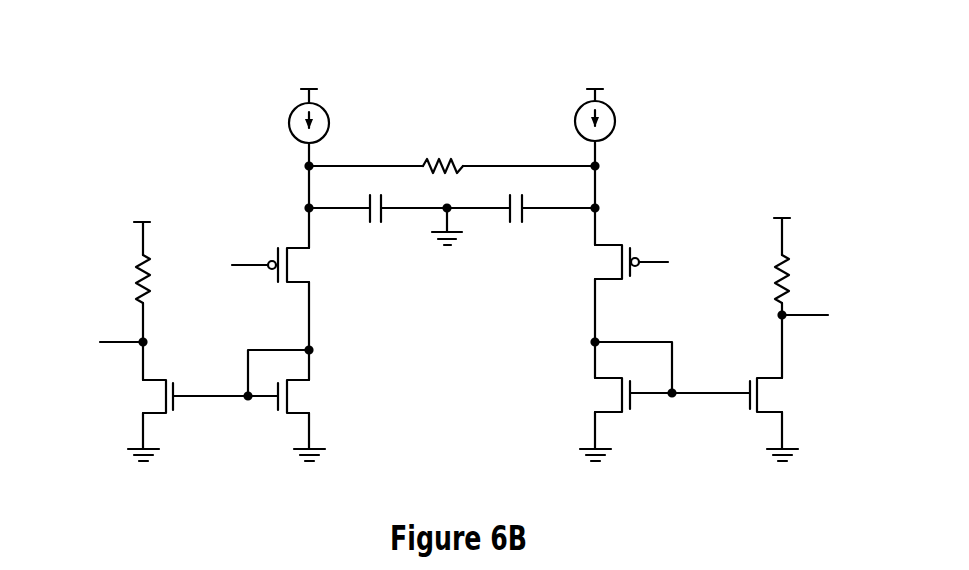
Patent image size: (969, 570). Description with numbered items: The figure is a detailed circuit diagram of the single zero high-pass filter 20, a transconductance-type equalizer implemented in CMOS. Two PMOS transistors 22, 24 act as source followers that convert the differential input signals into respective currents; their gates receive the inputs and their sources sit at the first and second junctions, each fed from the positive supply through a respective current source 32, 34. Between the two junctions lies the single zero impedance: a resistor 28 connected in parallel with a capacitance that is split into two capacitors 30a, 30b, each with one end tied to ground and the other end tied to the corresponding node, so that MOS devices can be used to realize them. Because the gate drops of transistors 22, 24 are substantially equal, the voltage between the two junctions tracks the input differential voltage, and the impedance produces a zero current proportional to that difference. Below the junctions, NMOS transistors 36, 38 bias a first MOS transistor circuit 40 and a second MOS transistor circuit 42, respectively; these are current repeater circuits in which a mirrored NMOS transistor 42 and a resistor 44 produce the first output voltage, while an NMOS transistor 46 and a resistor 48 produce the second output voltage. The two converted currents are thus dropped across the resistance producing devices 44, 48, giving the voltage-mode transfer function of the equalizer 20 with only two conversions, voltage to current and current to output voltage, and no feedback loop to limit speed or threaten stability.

The single zero high-pass filter 20 is at (676, 82).
The first MOS transistor 22 is at (322, 265).
The second MOS transistor 24 is at (592, 263).
The resistor 28 is at (452, 165).
The capacitor 30a is at (375, 227).
The capacitor 30b is at (515, 227).
The current source 32 is at (288, 121).
The current source 34 is at (615, 121).
The transistor 36 is at (318, 399).
The transistor 38 is at (590, 398).
The first MOS transistor circuit 40 is at (100, 240).
The second MOS transistor circuit 42 is at (138, 398).
The resistor 44 is at (150, 283).
The MOS transistor 46 is at (792, 386).
The resistor 48 is at (772, 282).